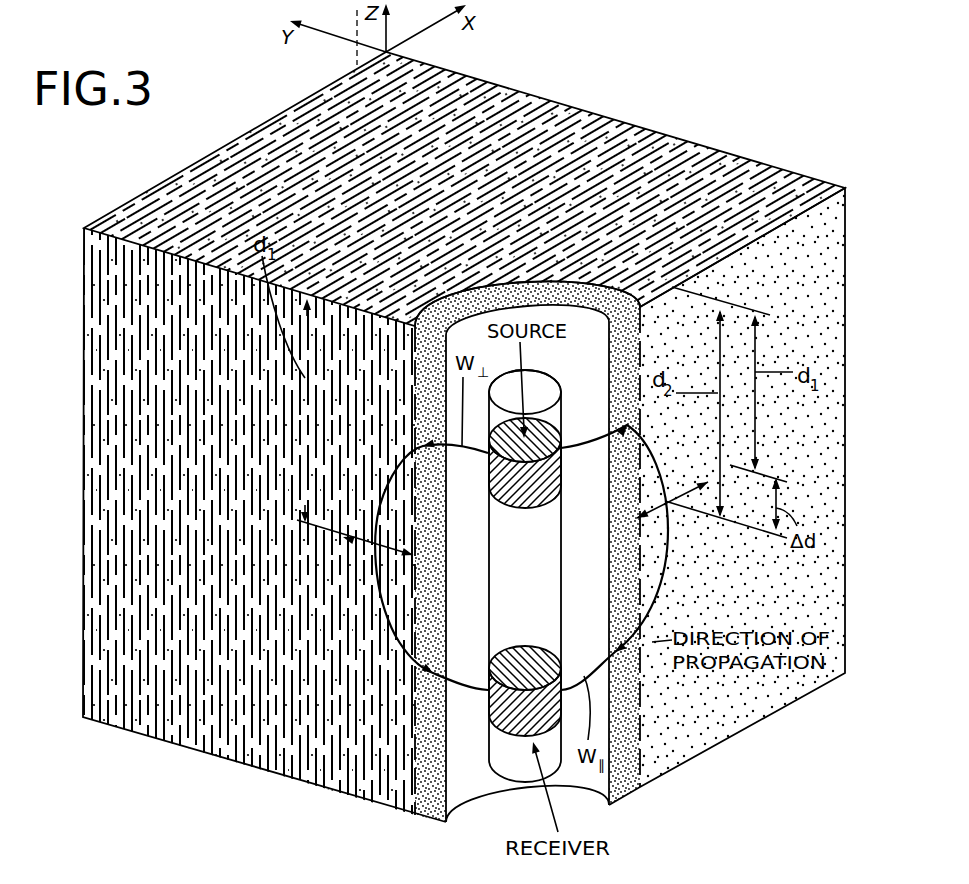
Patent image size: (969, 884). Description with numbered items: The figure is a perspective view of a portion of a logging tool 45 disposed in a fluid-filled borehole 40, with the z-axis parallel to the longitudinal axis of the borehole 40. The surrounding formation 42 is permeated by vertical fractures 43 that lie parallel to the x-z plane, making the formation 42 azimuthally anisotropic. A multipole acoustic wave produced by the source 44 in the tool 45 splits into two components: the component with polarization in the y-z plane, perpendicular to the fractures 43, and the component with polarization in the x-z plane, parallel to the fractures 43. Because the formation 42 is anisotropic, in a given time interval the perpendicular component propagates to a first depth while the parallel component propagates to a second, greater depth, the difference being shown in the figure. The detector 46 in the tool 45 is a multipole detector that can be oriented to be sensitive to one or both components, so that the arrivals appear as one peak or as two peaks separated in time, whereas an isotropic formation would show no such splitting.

The borehole 40 is at (596, 379).
The formation 42 is at (710, 700).
The vertical fractures 43 is at (137, 398).
The source 44 is at (496, 489).
The tool 45 is at (490, 572).
The detector 46 is at (500, 718).